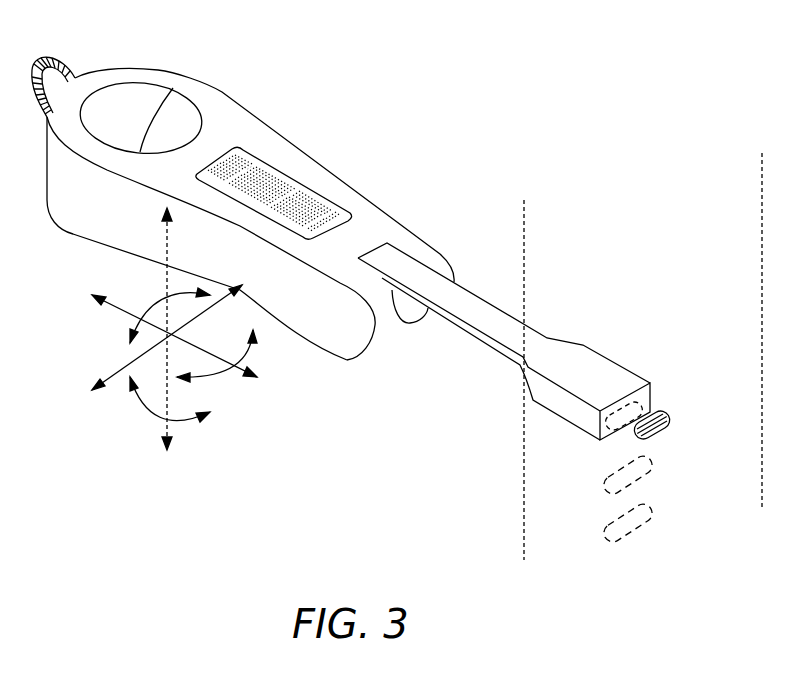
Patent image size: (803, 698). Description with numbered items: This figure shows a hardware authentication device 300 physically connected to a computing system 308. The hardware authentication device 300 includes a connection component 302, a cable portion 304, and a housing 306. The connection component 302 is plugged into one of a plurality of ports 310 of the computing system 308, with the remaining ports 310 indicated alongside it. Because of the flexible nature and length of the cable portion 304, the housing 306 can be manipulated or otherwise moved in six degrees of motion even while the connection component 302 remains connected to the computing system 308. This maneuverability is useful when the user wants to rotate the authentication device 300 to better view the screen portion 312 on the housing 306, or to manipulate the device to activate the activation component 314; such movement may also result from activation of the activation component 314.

The hardware authentication device 300 is at (393, 150).
The connection component 302 is at (657, 412).
The cable portion 304 is at (473, 336).
The housing 306 is at (124, 222).
The computing system 308 is at (657, 245).
The ports 310 is at (670, 410).
The screen portion 312 is at (243, 155).
The activation component 314 is at (133, 93).